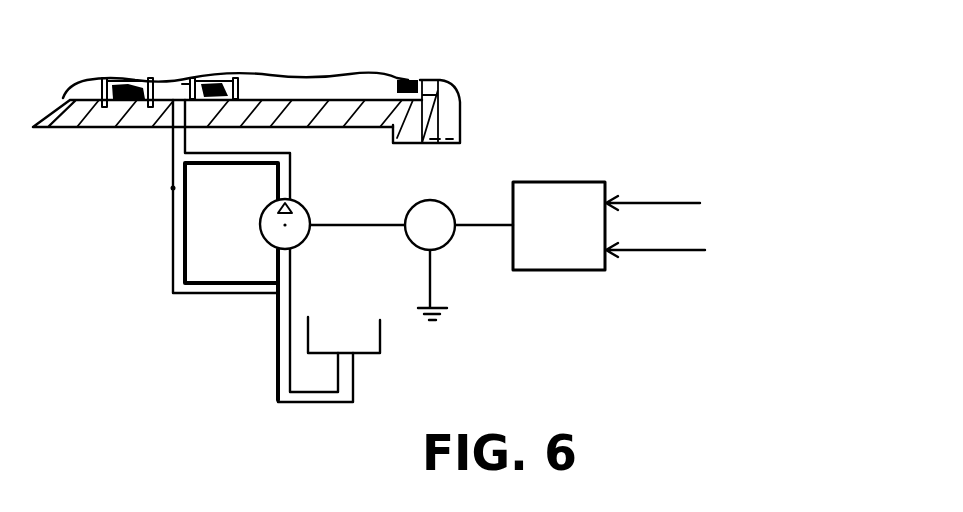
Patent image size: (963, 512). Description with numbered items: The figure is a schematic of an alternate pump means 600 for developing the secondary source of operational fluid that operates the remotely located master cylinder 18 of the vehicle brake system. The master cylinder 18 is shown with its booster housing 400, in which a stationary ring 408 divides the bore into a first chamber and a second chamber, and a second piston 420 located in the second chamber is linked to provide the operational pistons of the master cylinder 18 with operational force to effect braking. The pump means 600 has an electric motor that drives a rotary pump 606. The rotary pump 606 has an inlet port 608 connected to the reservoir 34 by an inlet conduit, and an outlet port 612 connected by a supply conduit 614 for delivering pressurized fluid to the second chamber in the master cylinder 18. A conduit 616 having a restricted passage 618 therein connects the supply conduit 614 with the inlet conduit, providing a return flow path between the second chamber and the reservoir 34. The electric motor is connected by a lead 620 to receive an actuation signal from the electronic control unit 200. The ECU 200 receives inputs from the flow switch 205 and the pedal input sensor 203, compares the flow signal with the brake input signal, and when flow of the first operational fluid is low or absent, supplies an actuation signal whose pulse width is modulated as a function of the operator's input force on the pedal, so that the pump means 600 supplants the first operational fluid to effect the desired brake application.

The master cylinder 18 is at (445, 114).
The reservoir 34 is at (365, 344).
The electronic control unit 200 is at (543, 185).
The pedal input sensor 203 is at (655, 253).
The flow switch 205 is at (653, 203).
The booster housing 400 is at (70, 120).
The stationary ring 408 is at (117, 79).
The second piston 420 is at (232, 78).
The pump means 600 is at (206, 337).
The rotary pump 606 is at (275, 246).
The inlet port 608 is at (292, 249).
The outlet port 612 is at (289, 199).
The conduit 614 is at (235, 153).
The conduit 616 is at (172, 262).
The restricted passage 618 is at (172, 188).
The lead 620 is at (484, 226).